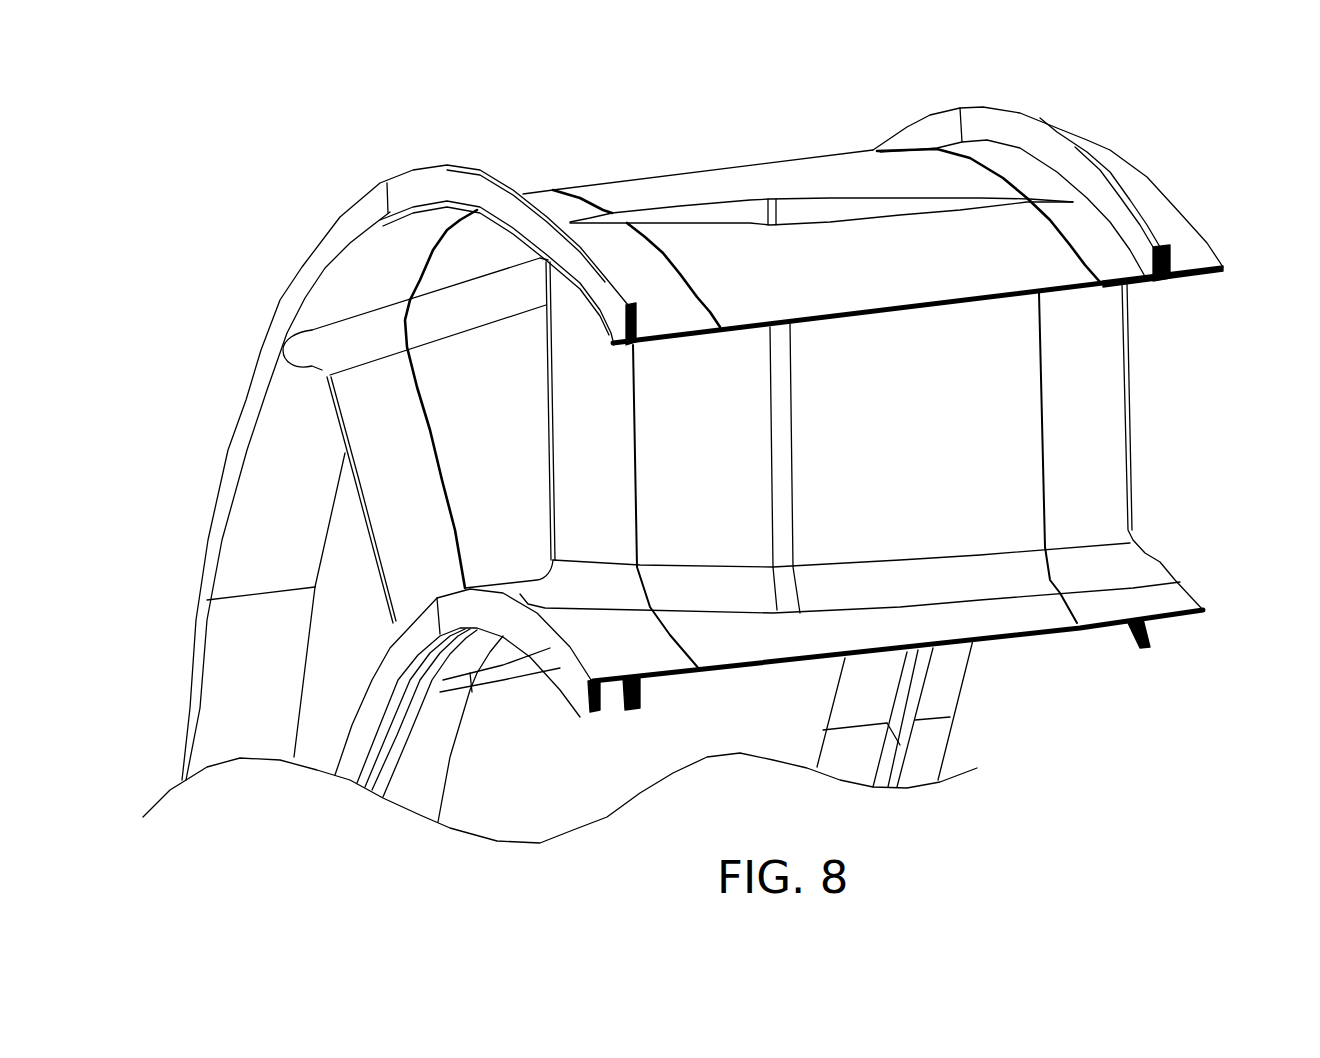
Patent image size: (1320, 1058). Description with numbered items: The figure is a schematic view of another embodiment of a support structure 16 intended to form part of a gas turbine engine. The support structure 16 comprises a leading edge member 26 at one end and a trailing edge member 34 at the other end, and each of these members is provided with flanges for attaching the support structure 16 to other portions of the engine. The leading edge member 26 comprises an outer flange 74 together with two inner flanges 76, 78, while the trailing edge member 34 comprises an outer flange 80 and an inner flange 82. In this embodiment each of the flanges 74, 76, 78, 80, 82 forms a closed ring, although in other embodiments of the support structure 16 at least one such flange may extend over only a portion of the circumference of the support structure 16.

The support structure 16 is at (653, 150).
The leading edge member 26 is at (241, 251).
The trailing edge member 34 is at (1189, 168).
The outer flange 74 is at (413, 187).
The inner flange 76 is at (590, 710).
The inner flange 78 is at (640, 710).
The outer flange 80 is at (1160, 237).
The inner flange 82 is at (1147, 647).